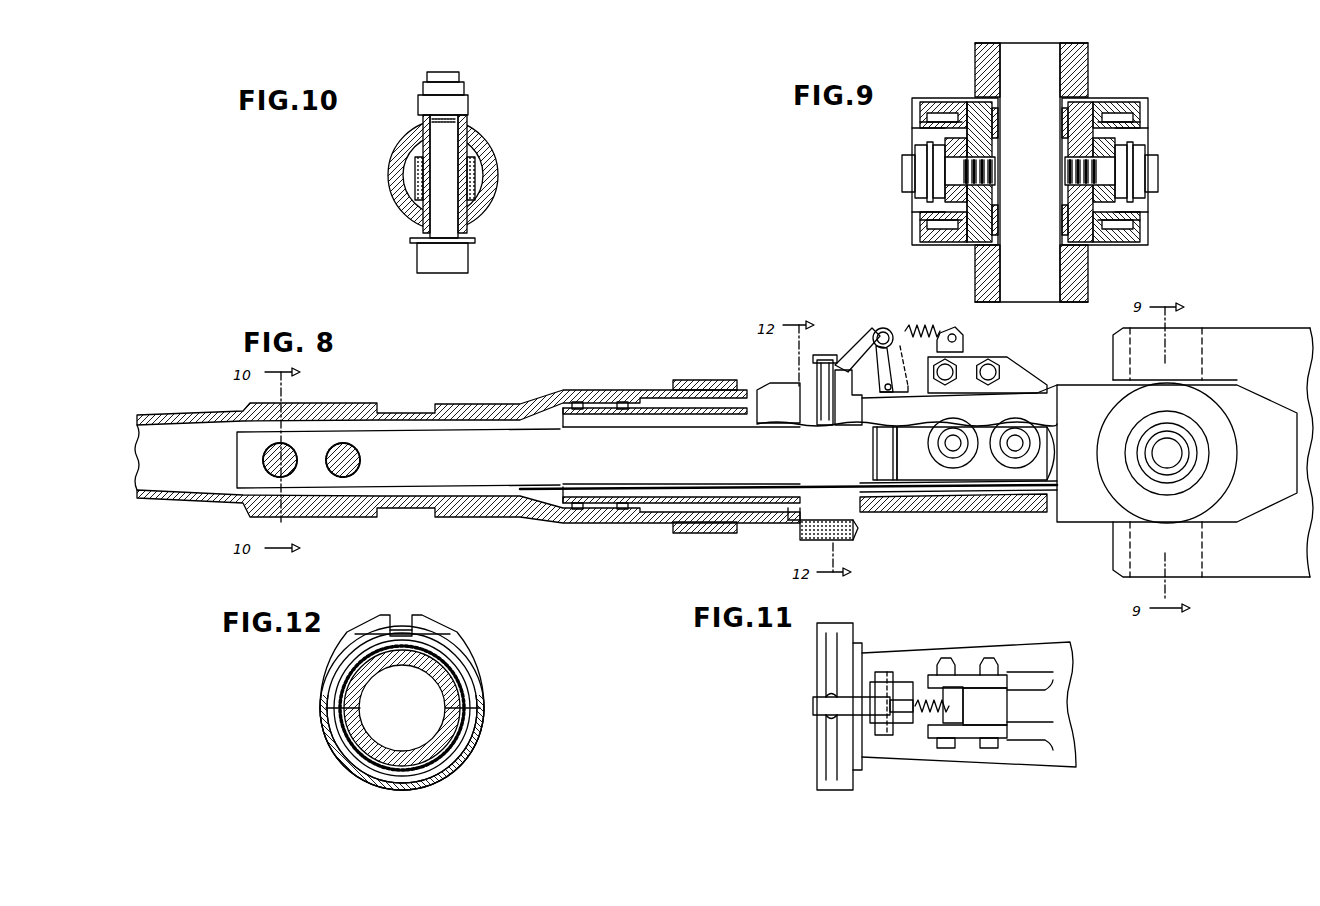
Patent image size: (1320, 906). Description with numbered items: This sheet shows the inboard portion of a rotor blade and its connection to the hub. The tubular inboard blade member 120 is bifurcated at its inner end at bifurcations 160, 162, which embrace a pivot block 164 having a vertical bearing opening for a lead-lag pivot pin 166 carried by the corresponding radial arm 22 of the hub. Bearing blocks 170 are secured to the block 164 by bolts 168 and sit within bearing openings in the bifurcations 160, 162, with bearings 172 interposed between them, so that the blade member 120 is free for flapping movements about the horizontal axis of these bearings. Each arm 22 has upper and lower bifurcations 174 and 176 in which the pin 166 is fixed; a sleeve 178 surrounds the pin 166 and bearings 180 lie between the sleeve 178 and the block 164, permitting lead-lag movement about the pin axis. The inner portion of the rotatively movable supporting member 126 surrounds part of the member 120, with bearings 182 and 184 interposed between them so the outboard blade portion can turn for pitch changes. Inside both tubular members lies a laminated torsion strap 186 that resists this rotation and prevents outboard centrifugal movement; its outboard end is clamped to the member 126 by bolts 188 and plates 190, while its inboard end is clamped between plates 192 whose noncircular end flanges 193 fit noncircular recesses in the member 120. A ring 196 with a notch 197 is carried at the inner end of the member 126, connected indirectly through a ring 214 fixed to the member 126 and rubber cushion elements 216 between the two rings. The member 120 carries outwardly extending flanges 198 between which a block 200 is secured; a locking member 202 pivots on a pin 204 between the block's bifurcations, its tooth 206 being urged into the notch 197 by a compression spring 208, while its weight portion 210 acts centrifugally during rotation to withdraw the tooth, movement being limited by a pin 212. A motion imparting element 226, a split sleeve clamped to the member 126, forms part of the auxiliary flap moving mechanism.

In FIG. 8, the radial arm 22 is at (1267, 337).
In FIG. 8, the inboard blade member 120 is at (1057, 387).
In FIG. 12, the inboard blade member 120 is at (382, 665).
In FIG. 11, the inboard blade member 120 is at (1025, 657).
In FIG. 8, the supporting member 126 is at (608, 393).
In FIG. 10, the supporting member 126 is at (403, 140).
In FIG. 12, the supporting member 126 is at (338, 693).
In FIG. 9, the bifurcation 160 is at (945, 96).
In FIG. 9, the bifurcation 162 is at (1122, 98).
In FIG. 9, the pivot block 164 is at (982, 105).
In FIG. 8, the lead-lag pivot pin 166 is at (1188, 355).
In FIG. 9, the lead-lag pivot pin 166 is at (1050, 72).
In FIG. 8, the bolt 168 is at (1158, 447).
In FIG. 9, the bolt 168 is at (910, 188).
In FIG. 8, the bearing block 170 is at (1108, 468).
In FIG. 9, the bearing block 170 is at (913, 122).
In FIG. 9, the bearing 172 is at (935, 128).
In FIG. 8, the upper bifurcation 174 is at (1113, 345).
In FIG. 9, the upper bifurcation 174 is at (1085, 80).
In FIG. 8, the lower bifurcation 176 is at (1120, 547).
In FIG. 9, the lower bifurcation 176 is at (1087, 265).
In FIG. 9, the sleeve 178 is at (1000, 162).
In FIG. 9, the bearing 180 is at (1063, 123).
In FIG. 8, the bearing 182 is at (800, 512).
In FIG. 12, the bearing 182 is at (332, 733).
In FIG. 8, the bearing 184 is at (588, 405).
In FIG. 8, the torsion strap 186 is at (400, 440).
In FIG. 10, the torsion strap 186 is at (417, 171).
In FIG. 8, the bolt 188 is at (328, 457).
In FIG. 10, the bolt 188 is at (445, 233).
In FIG. 10, the plate 190 is at (464, 153).
In FIG. 8, the plate 192 is at (910, 470).
In FIG. 8, the noncircular end flange 193 is at (1053, 507).
In FIG. 8, the ring 196 is at (820, 407).
In FIG. 12, the ring 196 is at (473, 670).
In FIG. 11, the ring 196 is at (818, 643).
In FIG. 12, the notch 197 is at (402, 620).
In FIG. 11, the notch 197 is at (818, 692).
In FIG. 8, the flange 198 is at (970, 363).
In FIG. 11, the flange 198 is at (963, 682).
In FIG. 8, the block 200 is at (918, 382).
In FIG. 11, the block 200 is at (993, 706).
In FIG. 8, the locking member 202 is at (862, 345).
In FIG. 11, the locking member 202 is at (862, 700).
In FIG. 8, the pivot pin 204 is at (882, 328).
In FIG. 11, the pivot pin 204 is at (885, 735).
In FIG. 8, the tooth 206 is at (827, 357).
In FIG. 11, the tooth 206 is at (823, 706).
In FIG. 8, the compression spring 208 is at (935, 323).
In FIG. 11, the compression spring 208 is at (925, 698).
In FIG. 8, the weight portion 210 is at (874, 369).
In FIG. 8, the pin 212 is at (883, 400).
In FIG. 8, the ring 214 is at (812, 540).
In FIG. 12, the ring 214 is at (335, 679).
In FIG. 8, the resilient cushion element 216 is at (852, 528).
In FIG. 12, the resilient cushion element 216 is at (482, 730).
In FIG. 8, the motion imparting element 226 is at (700, 378).